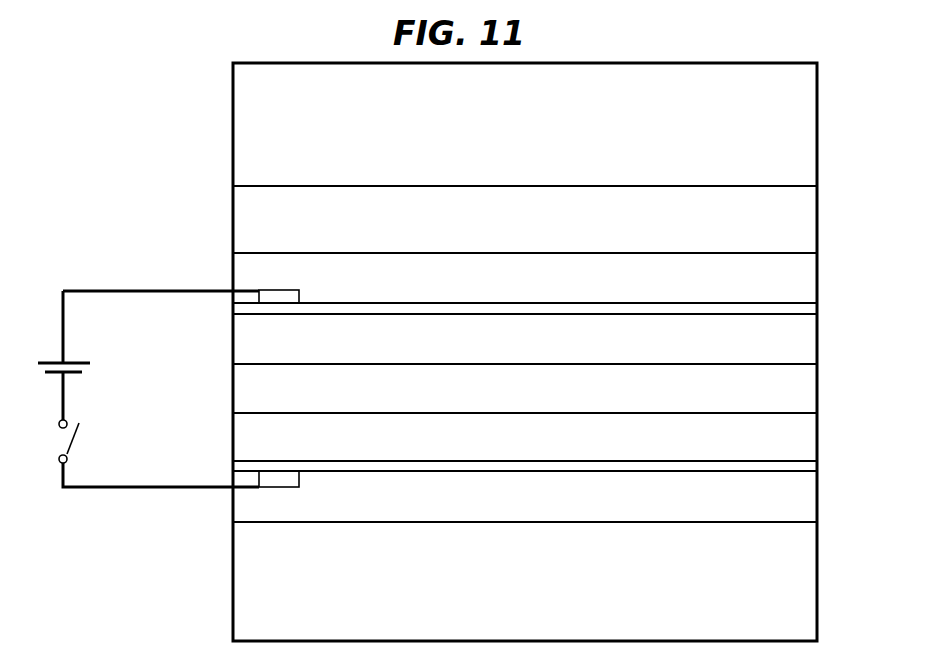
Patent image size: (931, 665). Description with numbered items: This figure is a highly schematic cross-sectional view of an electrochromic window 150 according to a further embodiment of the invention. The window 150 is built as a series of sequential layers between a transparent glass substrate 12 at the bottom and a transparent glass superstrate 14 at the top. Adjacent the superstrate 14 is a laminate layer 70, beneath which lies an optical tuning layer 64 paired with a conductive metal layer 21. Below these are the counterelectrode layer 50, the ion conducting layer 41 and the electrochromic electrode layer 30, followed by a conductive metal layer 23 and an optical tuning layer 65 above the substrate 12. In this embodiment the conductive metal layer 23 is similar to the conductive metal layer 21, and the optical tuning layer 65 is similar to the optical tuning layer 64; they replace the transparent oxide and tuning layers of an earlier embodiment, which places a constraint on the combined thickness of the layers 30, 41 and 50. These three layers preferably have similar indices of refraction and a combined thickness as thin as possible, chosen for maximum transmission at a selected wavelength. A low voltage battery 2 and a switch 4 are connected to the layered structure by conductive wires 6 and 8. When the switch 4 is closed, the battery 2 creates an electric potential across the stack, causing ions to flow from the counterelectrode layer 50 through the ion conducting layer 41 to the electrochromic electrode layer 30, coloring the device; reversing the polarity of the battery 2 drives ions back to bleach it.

The window 150 is at (183, 193).
The transparent glass superstrate 14 is at (807, 110).
The laminate layer 70 is at (807, 218).
The optical tuning layer 64 is at (798, 278).
The conductive metal layer 21 is at (807, 308).
The counterelectrode layer 50 is at (808, 337).
The ion conducting layer 41 is at (808, 383).
The electrochromic electrode layer 30 is at (808, 433).
The conductive metal layer 23 is at (808, 463).
The optical tuning layer 65 is at (800, 491).
The transparent glass substrate 12 is at (808, 558).
The conductive wire 6 is at (113, 291).
The conductive wire 8 is at (130, 487).
The low voltage battery 2 is at (45, 362).
The switch 4 is at (75, 438).